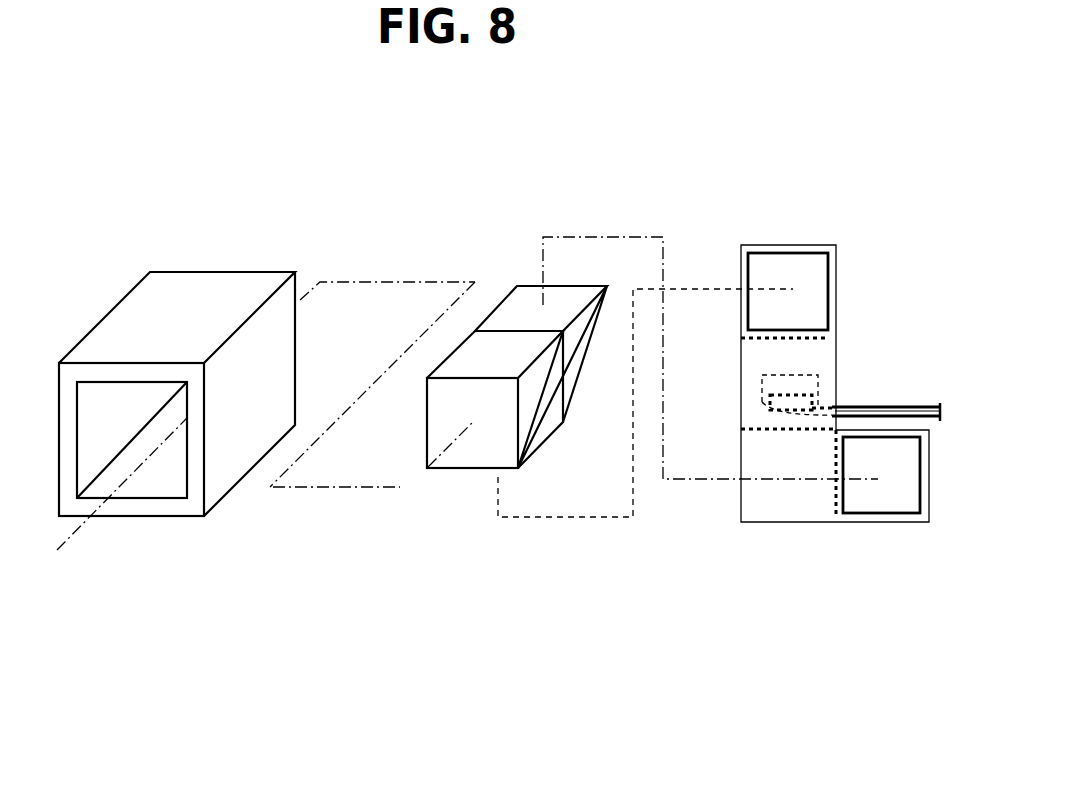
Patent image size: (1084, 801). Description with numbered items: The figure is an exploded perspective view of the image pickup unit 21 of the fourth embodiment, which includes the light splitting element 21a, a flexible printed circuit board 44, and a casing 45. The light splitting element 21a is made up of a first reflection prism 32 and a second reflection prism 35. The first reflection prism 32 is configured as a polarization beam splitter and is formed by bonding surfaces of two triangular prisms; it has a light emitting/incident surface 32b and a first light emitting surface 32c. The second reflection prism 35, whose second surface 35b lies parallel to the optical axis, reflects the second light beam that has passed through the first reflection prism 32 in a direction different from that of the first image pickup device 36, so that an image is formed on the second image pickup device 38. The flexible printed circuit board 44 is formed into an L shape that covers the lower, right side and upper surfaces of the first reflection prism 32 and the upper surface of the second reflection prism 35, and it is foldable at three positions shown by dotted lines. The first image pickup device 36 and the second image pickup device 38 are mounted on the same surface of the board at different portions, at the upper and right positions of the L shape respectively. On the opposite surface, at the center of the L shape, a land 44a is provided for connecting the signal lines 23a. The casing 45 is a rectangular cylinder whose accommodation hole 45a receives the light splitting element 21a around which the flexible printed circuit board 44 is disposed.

The image pickup unit 21 is at (545, 196).
The light splitting element 21a is at (483, 302).
The signal lines 23a is at (880, 408).
The first reflection prism 32 is at (443, 448).
The light emitting/incident surface 32b is at (463, 368).
The first light emitting surface 32c is at (465, 470).
The second reflection prism 35 is at (525, 298).
The second surface 35b is at (560, 302).
The first image pickup device 36 is at (817, 272).
The second image pickup device 38 is at (878, 507).
The flexible printed circuit board 44 is at (823, 357).
The land 44a is at (792, 375).
The casing 45 is at (187, 293).
The accommodation hole 45a is at (92, 412).